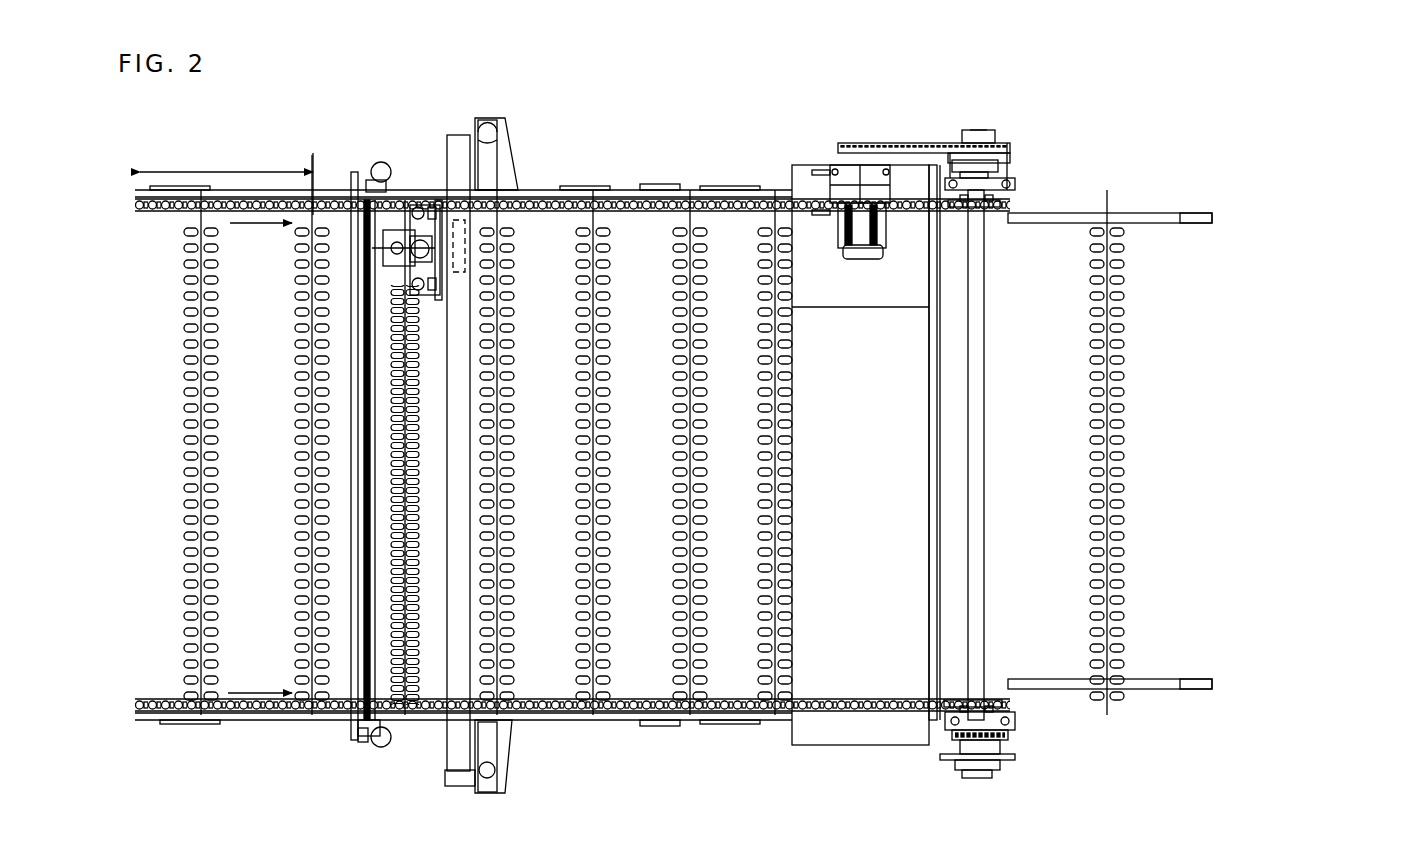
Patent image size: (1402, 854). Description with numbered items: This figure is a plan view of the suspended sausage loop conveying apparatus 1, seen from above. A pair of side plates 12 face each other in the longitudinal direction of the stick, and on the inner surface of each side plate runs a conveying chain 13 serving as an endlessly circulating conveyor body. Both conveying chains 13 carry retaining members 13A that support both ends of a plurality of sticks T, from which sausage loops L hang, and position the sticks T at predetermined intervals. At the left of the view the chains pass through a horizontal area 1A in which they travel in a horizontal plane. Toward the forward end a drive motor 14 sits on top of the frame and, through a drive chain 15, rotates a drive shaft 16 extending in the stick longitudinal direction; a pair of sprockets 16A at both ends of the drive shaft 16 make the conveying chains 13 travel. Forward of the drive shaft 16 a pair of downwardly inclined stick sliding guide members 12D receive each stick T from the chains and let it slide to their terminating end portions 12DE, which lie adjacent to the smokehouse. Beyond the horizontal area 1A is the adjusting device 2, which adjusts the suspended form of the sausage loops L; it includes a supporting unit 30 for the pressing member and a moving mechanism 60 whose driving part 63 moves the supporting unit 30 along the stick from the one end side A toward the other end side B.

The suspended sausage loop conveying apparatus 1 is at (712, 132).
The horizontal area 1A is at (266, 172).
The adjusting device 2 is at (372, 276).
The side plates 12 is at (732, 188).
The stick sliding guide members 12D is at (1143, 218).
The terminating end portions 12DE is at (1213, 218).
The conveying chain 13 is at (640, 198).
The retaining members 13A is at (683, 196).
The drive motor 14 is at (838, 218).
The drive chain 15 is at (930, 146).
The drive shaft 16 is at (976, 388).
The sprockets 16A is at (990, 208).
The supporting unit 30 is at (425, 190).
The moving mechanism 60 is at (468, 134).
The driving part 63 is at (460, 220).
The one end side A is at (260, 225).
The other end side B is at (262, 690).
The sausage loop L is at (390, 440).
The stick T is at (402, 722).